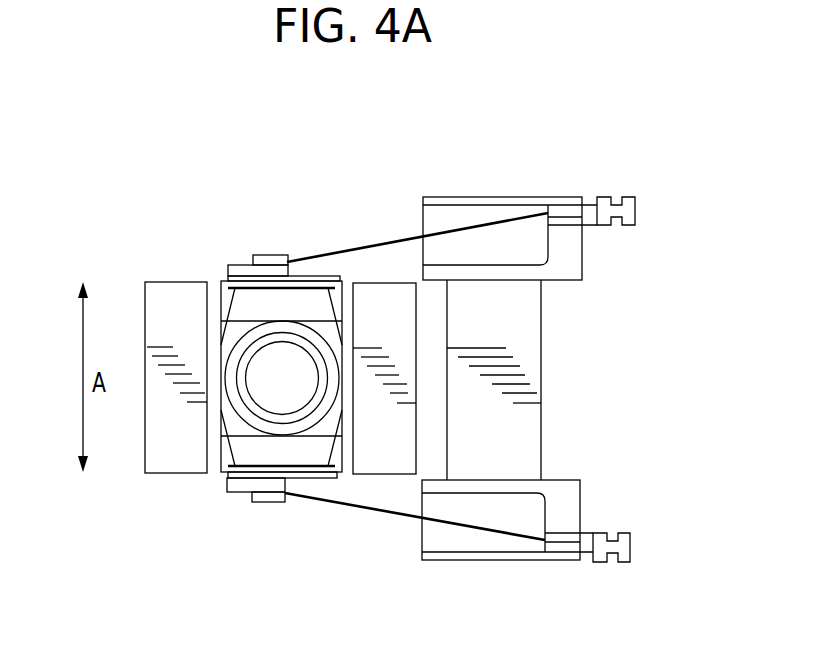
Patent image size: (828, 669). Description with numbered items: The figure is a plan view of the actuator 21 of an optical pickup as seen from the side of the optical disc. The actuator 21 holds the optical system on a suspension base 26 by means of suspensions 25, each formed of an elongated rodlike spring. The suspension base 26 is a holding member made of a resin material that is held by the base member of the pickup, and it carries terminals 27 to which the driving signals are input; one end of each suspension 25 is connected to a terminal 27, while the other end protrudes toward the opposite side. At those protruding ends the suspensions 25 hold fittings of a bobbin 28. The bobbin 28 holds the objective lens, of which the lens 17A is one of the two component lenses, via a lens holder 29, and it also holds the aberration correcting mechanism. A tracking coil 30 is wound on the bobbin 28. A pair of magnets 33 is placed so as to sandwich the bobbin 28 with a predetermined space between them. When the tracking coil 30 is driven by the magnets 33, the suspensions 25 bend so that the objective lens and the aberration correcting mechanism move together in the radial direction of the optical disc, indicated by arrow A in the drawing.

The actuator 21 is at (560, 137).
The suspension 25 is at (371, 250).
The suspension base 26 is at (468, 215).
The terminal 27 is at (635, 208).
The bobbin 28 is at (273, 503).
The lens holder 29 is at (252, 337).
The tracking coil 30 is at (223, 305).
The magnet 33 is at (152, 302).
The lens 17A is at (282, 368).